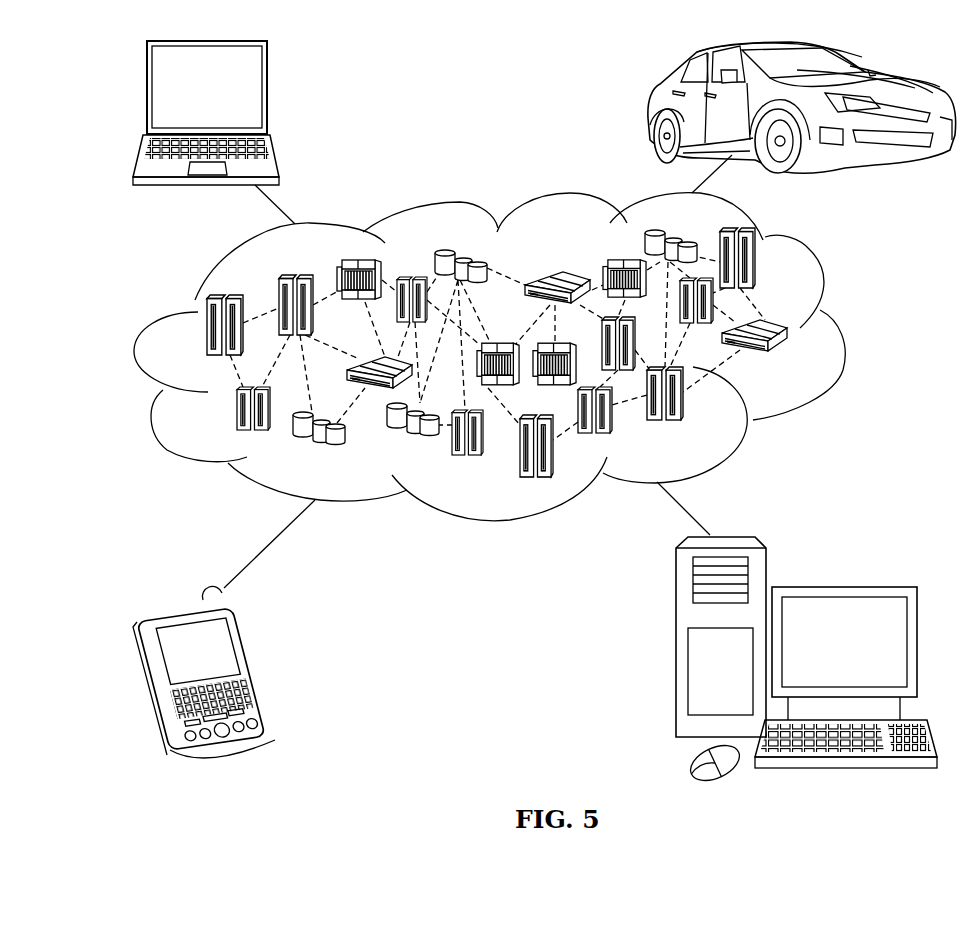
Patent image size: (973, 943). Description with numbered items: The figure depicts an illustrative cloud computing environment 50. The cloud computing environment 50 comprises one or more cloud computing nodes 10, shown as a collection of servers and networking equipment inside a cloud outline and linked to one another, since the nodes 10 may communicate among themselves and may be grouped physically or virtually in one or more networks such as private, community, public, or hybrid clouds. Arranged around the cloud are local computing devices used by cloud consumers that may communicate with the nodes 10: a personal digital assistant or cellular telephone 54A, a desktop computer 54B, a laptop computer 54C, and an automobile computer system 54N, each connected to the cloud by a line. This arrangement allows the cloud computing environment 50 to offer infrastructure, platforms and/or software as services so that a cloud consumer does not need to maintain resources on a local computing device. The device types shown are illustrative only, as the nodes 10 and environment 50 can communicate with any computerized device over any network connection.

The cloud computing nodes 10 is at (800, 366).
The cloud computing environment 50 is at (840, 334).
The personal digital assistant or cellular telephone 54A is at (258, 668).
The desktop computer 54B is at (842, 587).
The laptop computer 54C is at (267, 93).
The automobile computer system 54N is at (651, 107).